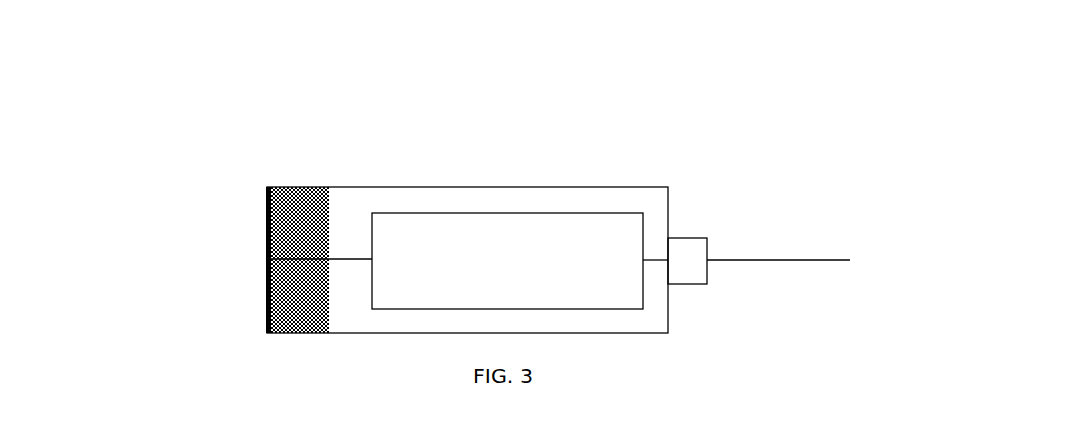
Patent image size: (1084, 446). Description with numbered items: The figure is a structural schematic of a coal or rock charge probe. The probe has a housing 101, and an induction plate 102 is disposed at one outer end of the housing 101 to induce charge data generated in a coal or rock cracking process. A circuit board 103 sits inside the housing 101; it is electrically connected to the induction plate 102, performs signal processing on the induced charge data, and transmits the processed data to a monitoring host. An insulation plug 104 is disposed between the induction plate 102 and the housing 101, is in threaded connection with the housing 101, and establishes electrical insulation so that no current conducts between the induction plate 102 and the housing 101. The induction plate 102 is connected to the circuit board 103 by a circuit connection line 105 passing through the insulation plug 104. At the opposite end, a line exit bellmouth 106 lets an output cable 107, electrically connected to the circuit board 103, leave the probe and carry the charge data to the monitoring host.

The housing 101 is at (467, 216).
The induction plate 102 is at (221, 233).
The circuit board 103 is at (507, 191).
The insulation plug 104 is at (259, 260).
The circuit connection line 105 is at (305, 189).
The line exit bellmouth 106 is at (719, 200).
The output cable 107 is at (778, 211).